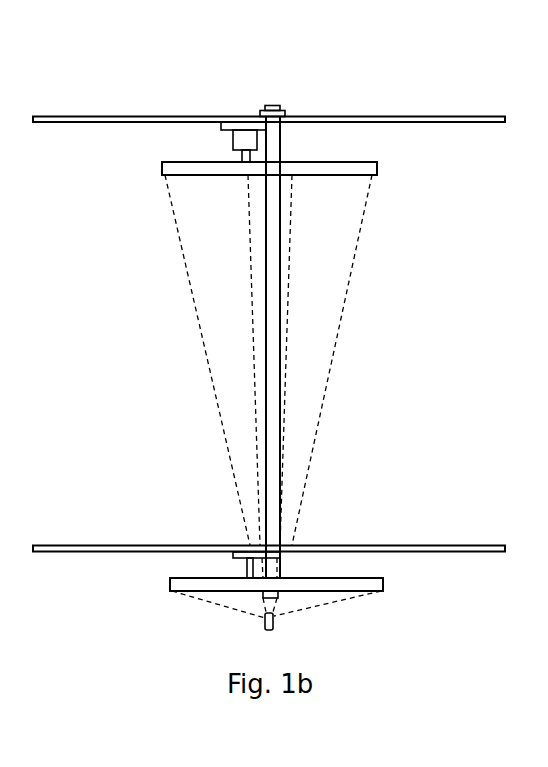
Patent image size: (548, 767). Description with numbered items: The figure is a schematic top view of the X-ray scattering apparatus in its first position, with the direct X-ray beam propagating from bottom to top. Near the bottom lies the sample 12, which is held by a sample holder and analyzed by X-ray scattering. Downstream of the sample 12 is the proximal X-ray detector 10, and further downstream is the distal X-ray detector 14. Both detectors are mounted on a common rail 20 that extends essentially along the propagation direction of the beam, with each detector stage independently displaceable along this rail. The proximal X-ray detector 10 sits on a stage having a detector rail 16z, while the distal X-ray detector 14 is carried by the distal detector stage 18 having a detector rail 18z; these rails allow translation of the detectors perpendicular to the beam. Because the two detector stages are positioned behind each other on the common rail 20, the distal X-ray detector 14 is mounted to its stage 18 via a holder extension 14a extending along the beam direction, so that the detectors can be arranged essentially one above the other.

The distal detector stage 18 is at (269, 70).
The detector rail 18z is at (100, 115).
The holder extension 14a is at (243, 146).
The distal X-ray detector 14 is at (367, 167).
The common rail 20 is at (275, 323).
The detector rail 16z is at (93, 543).
The proximal X-ray detector 10 is at (373, 585).
The sample 12 is at (273, 628).